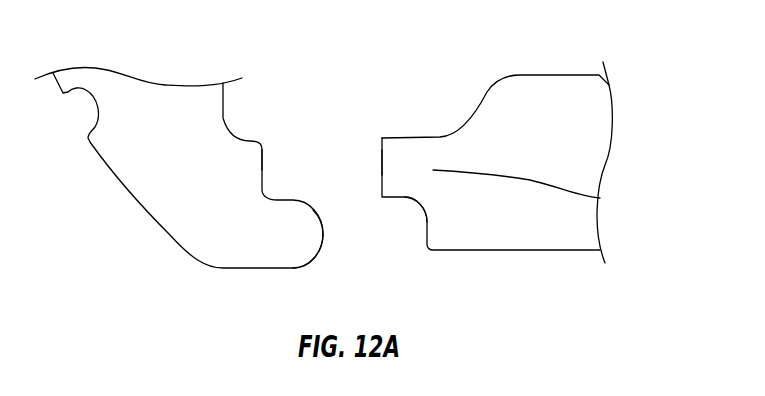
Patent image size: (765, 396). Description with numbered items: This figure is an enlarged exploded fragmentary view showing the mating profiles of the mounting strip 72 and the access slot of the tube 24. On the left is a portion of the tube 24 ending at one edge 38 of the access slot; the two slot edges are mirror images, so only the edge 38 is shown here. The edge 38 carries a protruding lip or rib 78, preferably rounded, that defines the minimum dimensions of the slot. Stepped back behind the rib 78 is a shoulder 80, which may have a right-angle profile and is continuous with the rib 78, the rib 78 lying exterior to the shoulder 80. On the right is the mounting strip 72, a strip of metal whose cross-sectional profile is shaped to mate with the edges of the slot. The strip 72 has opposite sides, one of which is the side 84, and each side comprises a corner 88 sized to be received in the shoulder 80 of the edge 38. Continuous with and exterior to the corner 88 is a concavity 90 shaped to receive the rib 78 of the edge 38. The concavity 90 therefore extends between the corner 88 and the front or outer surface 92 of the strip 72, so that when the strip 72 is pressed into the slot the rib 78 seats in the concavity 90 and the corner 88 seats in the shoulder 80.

The tube 24 is at (170, 236).
The edge 38 is at (300, 238).
The mounting strip 72 is at (490, 238).
The rib 78 is at (325, 228).
The shoulder 80 is at (263, 167).
The side 84 is at (600, 198).
The corner 88 is at (381, 160).
The concavity 90 is at (415, 205).
The outer surface 92 is at (565, 250).